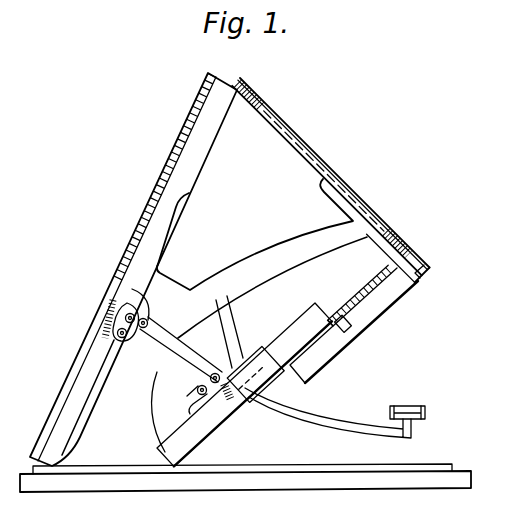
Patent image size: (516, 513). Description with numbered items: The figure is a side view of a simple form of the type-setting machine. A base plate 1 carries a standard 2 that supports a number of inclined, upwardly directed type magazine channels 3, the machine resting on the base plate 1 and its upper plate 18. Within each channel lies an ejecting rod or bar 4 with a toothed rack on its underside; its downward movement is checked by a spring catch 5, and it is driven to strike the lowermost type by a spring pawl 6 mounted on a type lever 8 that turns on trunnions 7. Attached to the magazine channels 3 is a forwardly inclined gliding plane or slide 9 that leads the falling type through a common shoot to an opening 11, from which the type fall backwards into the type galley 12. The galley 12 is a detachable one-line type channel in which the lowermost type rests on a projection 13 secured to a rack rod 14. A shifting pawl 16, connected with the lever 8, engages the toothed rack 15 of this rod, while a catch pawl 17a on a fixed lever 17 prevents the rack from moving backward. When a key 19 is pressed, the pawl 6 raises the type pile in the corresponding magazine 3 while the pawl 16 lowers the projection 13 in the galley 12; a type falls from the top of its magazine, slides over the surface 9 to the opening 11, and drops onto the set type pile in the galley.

The base plate 1 is at (390, 478).
The upper plate 18 is at (118, 447).
The standard 2 is at (245, 261).
The type magazine channels 3 is at (158, 210).
The ejecting rod or bar 4 is at (134, 297).
The spring catch 5 is at (115, 328).
The spring pawl 6 is at (125, 306).
The trunnions 7 is at (149, 321).
The type lever 8 is at (330, 419).
The gliding plane or slide 9 is at (320, 173).
The opening 11 is at (425, 279).
The type galley 12 is at (390, 299).
The projection 13 is at (353, 334).
The rack rod 14 is at (204, 436).
The toothed rack 15 is at (232, 406).
The shifting pawl 16 is at (230, 372).
The fixed lever 17 is at (172, 368).
The catch pawl 17a is at (203, 396).
The key 19 is at (410, 404).